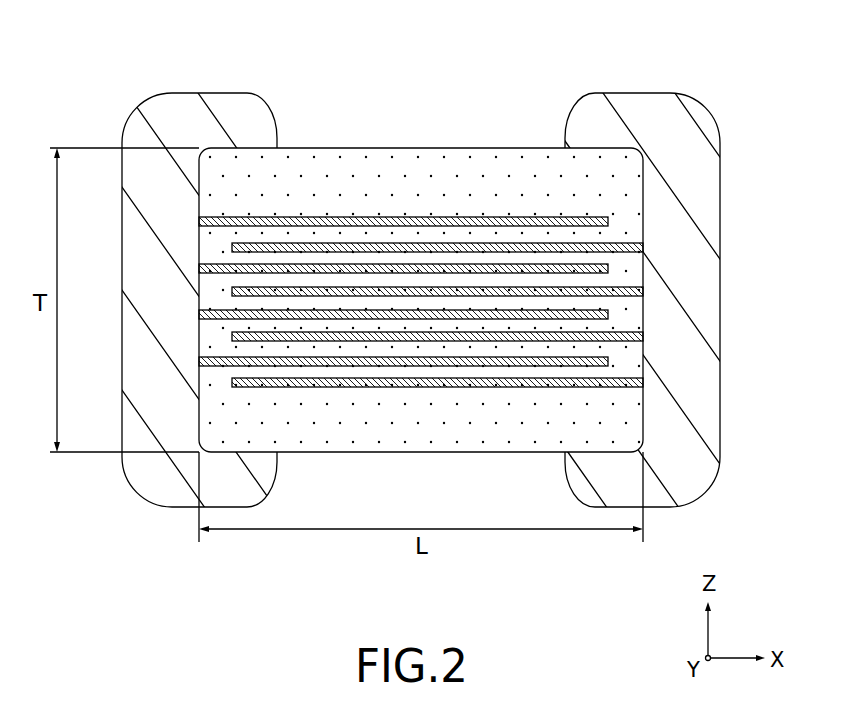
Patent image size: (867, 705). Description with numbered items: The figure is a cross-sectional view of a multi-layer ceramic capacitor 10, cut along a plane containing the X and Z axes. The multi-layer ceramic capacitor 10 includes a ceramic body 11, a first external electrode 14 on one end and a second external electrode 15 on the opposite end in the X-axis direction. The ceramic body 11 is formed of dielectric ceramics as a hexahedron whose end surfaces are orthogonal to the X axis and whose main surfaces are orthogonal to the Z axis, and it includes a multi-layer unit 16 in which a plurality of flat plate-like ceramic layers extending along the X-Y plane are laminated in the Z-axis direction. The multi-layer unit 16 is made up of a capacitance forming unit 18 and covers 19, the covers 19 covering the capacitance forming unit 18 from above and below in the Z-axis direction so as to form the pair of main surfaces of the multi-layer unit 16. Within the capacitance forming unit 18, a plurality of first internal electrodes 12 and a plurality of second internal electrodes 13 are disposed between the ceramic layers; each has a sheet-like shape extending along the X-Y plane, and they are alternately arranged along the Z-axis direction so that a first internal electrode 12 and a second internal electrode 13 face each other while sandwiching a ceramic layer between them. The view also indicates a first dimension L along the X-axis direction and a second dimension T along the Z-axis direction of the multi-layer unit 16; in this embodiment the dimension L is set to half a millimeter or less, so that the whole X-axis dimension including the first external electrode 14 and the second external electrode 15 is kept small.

The multi-layer ceramic capacitor 10 is at (141, 49).
The ceramic body 11 is at (446, 277).
The first internal electrodes 12 is at (302, 357).
The second internal electrodes 13 is at (488, 378).
The first external electrode 14 is at (137, 304).
The second external electrode 15 is at (711, 304).
The multi-layer unit 16 is at (418, 433).
The capacitance forming unit 18 is at (647, 215).
The covers 19 is at (647, 148).